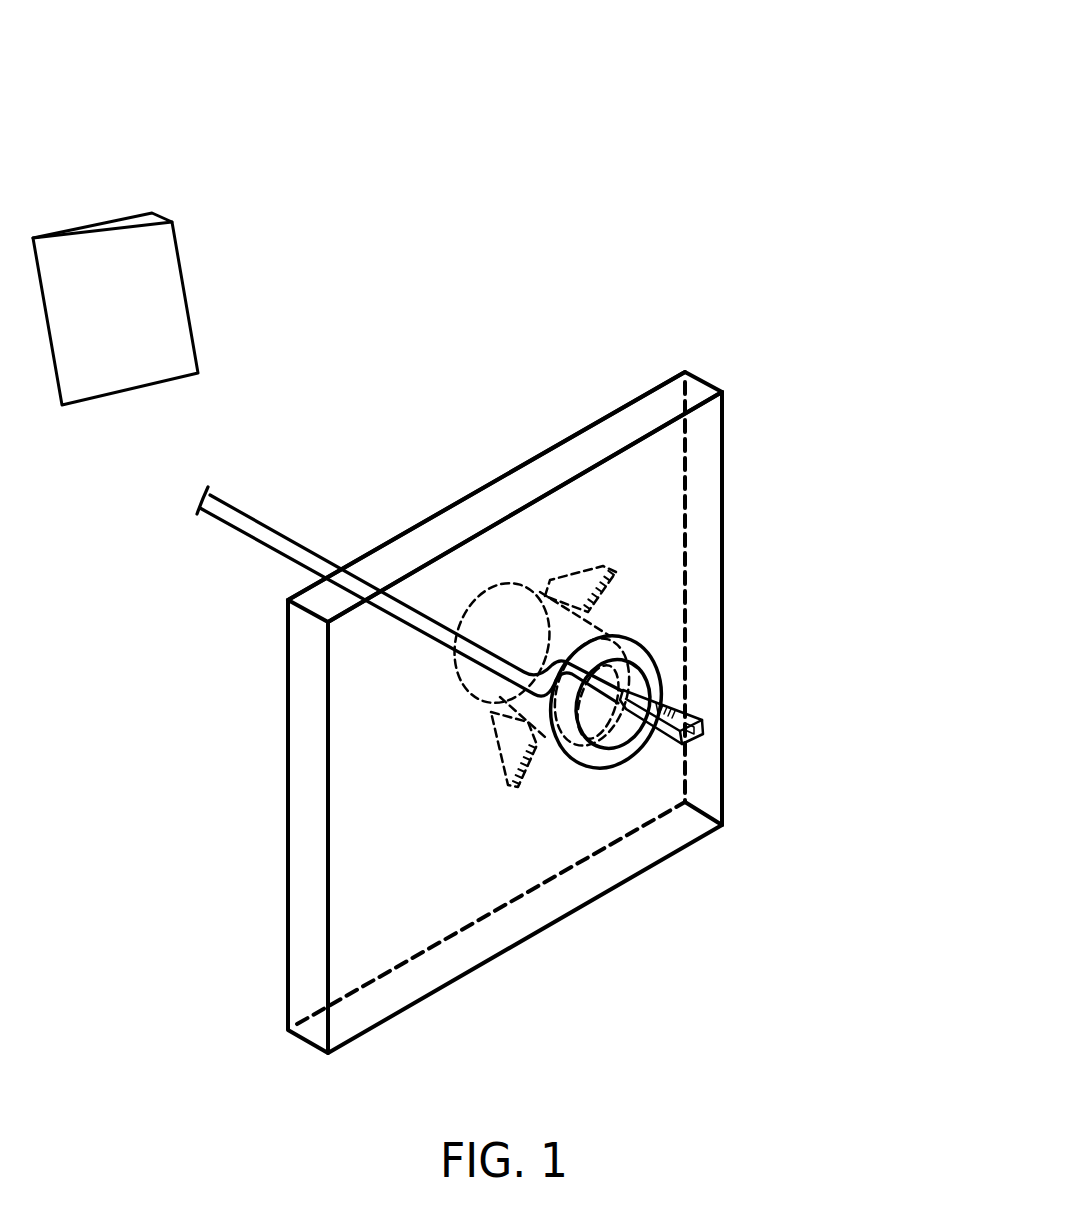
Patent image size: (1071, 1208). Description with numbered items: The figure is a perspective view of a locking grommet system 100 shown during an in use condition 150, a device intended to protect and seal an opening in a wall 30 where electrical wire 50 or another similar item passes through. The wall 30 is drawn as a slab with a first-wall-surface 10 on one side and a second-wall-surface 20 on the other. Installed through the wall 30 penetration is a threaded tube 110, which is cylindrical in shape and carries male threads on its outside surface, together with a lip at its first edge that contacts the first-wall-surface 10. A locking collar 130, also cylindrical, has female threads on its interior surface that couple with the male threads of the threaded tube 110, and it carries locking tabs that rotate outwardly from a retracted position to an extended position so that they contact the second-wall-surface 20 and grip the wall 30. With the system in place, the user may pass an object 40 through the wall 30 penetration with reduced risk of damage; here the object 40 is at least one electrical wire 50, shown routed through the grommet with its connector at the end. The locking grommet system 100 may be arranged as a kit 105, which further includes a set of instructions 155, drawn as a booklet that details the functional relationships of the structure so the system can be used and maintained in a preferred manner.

The first-wall-surface 10 is at (673, 457).
The second-wall-surface 20 is at (470, 493).
The wall 30 is at (725, 550).
The object 40 is at (498, 646).
The electrical wire 50 is at (700, 742).
The locking grommet system 100 is at (790, 68).
The kit 105 is at (800, 106).
The threaded tube 110 is at (556, 748).
The locking collar 130 is at (518, 460).
The in use condition 150 is at (809, 143).
The set of instructions 155 is at (137, 217).